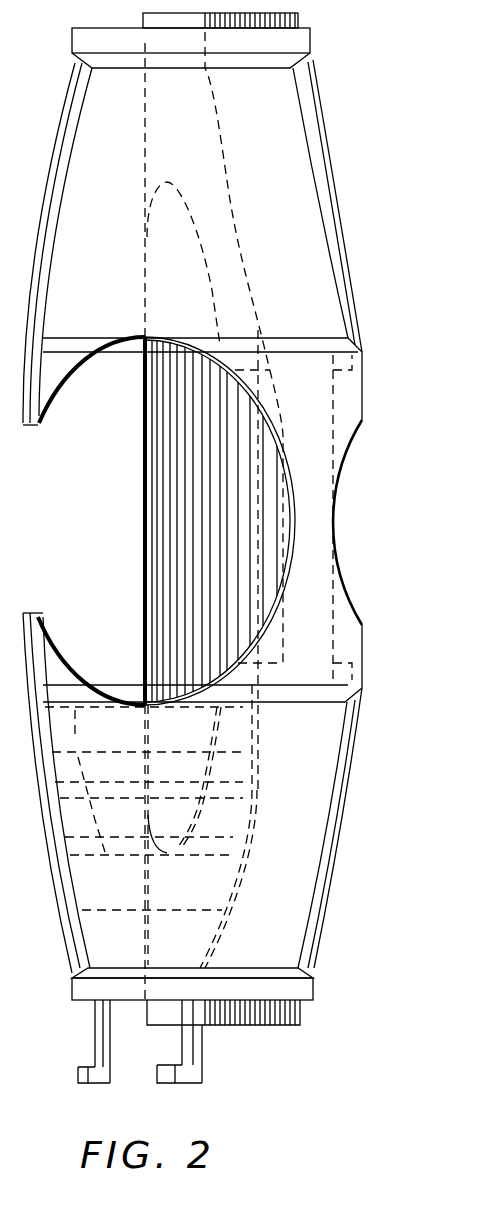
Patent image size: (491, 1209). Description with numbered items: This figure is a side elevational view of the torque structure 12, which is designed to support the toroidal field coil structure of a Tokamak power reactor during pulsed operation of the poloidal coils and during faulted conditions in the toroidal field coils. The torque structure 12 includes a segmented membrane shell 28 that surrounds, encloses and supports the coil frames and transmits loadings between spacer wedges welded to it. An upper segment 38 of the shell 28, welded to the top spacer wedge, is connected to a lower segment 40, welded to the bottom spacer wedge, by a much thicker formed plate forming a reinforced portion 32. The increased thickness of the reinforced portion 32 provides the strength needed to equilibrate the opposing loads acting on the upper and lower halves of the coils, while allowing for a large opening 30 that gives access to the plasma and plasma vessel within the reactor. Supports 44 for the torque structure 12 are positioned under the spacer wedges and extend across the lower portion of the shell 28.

The torque structure 12 is at (356, 267).
The membrane shell 28 is at (290, 925).
The opening 30 is at (77, 375).
The reinforced portion 32 is at (360, 641).
The segment 38 is at (320, 213).
The segment 40 is at (322, 790).
The supports 44 is at (202, 1075).